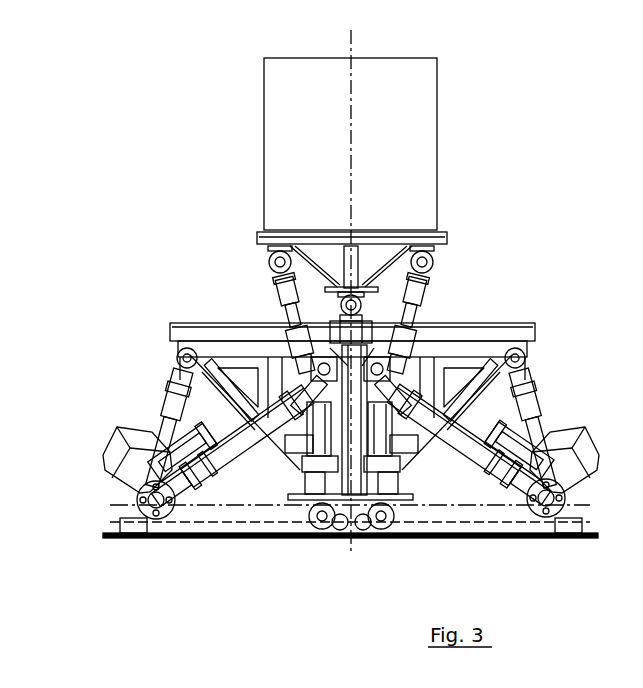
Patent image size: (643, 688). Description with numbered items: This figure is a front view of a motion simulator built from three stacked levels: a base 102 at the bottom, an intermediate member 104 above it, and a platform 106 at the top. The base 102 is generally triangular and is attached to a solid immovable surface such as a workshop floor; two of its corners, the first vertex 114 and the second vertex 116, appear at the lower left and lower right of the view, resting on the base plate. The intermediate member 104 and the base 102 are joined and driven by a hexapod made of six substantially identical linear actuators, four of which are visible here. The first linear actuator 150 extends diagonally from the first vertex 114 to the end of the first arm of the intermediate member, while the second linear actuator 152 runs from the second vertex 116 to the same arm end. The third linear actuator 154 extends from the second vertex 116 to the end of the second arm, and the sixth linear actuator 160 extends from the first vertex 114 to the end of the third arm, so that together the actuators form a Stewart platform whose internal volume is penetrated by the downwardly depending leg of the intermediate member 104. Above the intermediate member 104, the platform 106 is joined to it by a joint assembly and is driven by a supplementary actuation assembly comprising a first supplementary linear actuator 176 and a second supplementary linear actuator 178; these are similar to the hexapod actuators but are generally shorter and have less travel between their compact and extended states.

The base 102 is at (247, 560).
The intermediate member 104 is at (548, 321).
The platform 106 is at (478, 245).
The first vertex 114 is at (560, 524).
The second vertex 116 is at (132, 533).
The first linear actuator 150 is at (455, 445).
The second linear actuator 152 is at (263, 423).
The third linear actuator 154 is at (175, 413).
The sixth linear actuator 160 is at (527, 422).
The first supplementary linear actuator 176 is at (418, 303).
The second supplementary linear actuator 178 is at (255, 310).